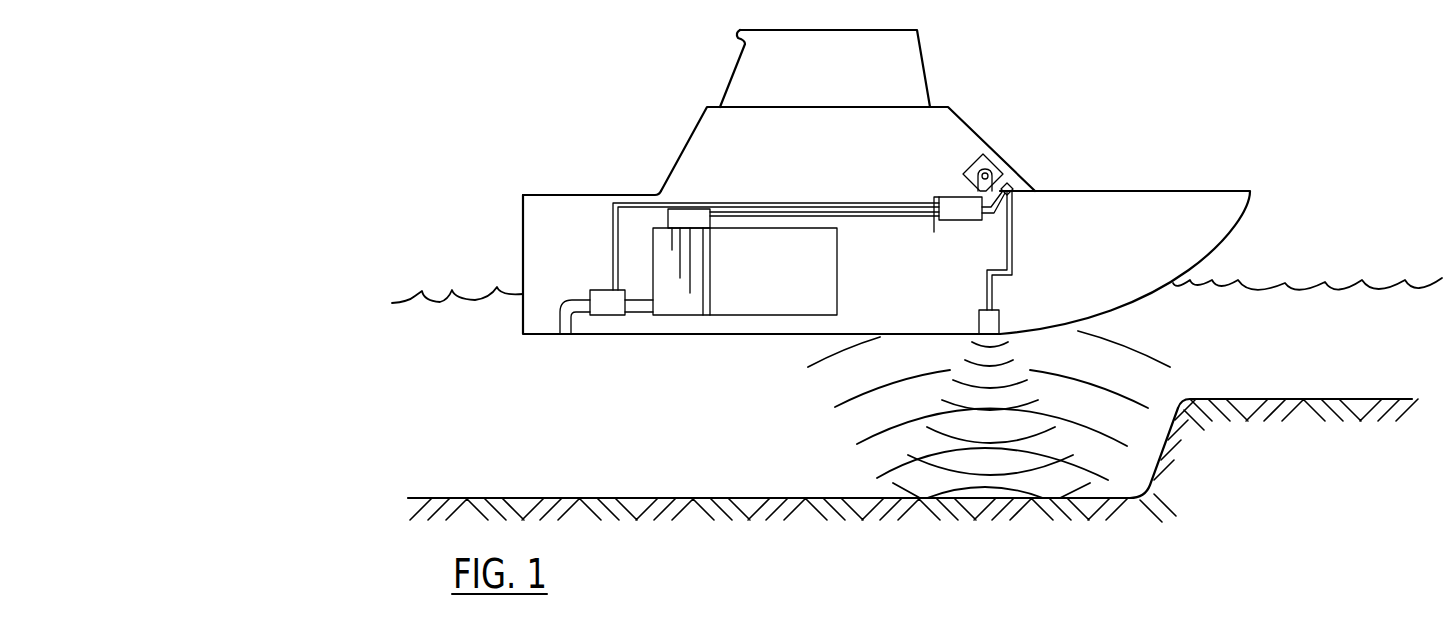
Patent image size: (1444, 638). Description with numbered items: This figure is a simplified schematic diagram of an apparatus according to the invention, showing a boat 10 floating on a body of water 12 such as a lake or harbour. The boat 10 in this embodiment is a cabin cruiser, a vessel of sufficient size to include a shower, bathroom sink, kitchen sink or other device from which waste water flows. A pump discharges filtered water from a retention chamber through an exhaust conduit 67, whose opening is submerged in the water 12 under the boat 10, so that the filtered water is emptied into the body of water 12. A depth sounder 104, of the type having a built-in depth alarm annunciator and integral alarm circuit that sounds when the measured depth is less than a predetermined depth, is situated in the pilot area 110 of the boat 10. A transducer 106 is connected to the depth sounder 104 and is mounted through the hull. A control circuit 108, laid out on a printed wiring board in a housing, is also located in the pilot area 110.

The boat 10 is at (886, 182).
The body of water 12 is at (1260, 317).
The exhaust conduit 67 is at (562, 307).
The depth sounder 104 is at (985, 175).
The transducer 106 is at (997, 317).
The control circuit 108 is at (963, 202).
The pilot area 110 is at (940, 138).